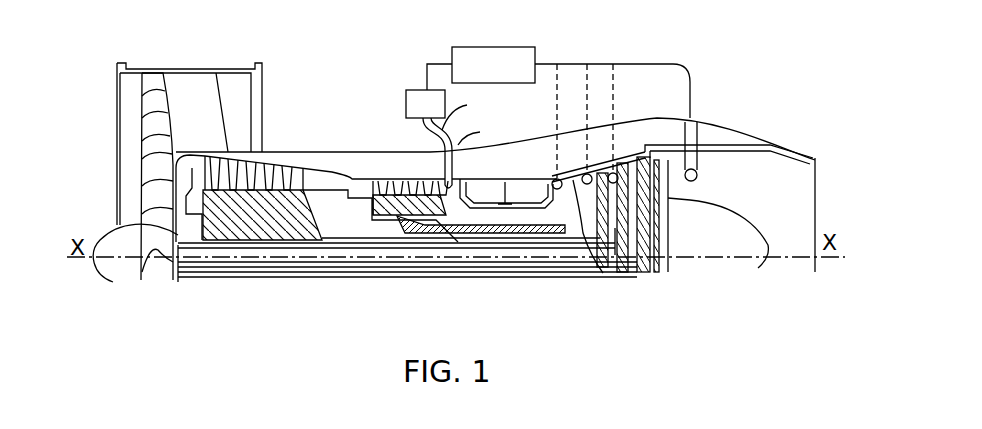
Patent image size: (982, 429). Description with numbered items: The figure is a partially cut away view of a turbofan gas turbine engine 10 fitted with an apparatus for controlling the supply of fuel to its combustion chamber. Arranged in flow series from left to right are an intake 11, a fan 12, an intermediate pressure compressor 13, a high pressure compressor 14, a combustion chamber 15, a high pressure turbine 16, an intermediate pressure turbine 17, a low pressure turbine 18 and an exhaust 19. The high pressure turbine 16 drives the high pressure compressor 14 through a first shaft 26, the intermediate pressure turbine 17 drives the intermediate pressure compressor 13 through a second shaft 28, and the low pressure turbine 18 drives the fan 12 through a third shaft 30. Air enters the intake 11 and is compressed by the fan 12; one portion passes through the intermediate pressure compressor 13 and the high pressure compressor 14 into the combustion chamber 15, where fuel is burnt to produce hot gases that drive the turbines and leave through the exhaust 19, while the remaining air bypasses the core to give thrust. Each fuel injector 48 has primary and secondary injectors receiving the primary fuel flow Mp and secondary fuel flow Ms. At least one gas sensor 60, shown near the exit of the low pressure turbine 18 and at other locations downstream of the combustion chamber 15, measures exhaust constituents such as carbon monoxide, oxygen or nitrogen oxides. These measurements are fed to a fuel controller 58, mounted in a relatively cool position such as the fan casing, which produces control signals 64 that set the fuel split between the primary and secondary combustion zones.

The turbofan gas turbine engine 10 is at (366, 112).
The intake 11 is at (97, 159).
The fan 12 is at (160, 97).
The intermediate pressure compressor 13 is at (262, 197).
The high pressure compressor 14 is at (400, 178).
The combustion chamber 15 is at (521, 165).
The high pressure turbine 16 is at (574, 170).
The intermediate pressure turbine 17 is at (598, 176).
The low pressure turbine 18 is at (648, 182).
The exhaust 19 is at (790, 215).
The first shaft 26 is at (478, 226).
The second shaft 28 is at (518, 238).
The third shaft 30 is at (563, 265).
The fuel injector 48 is at (461, 176).
The fuel controller 58 is at (485, 62).
The gas sensor 60 is at (696, 172).
The control signals 64 is at (428, 62).